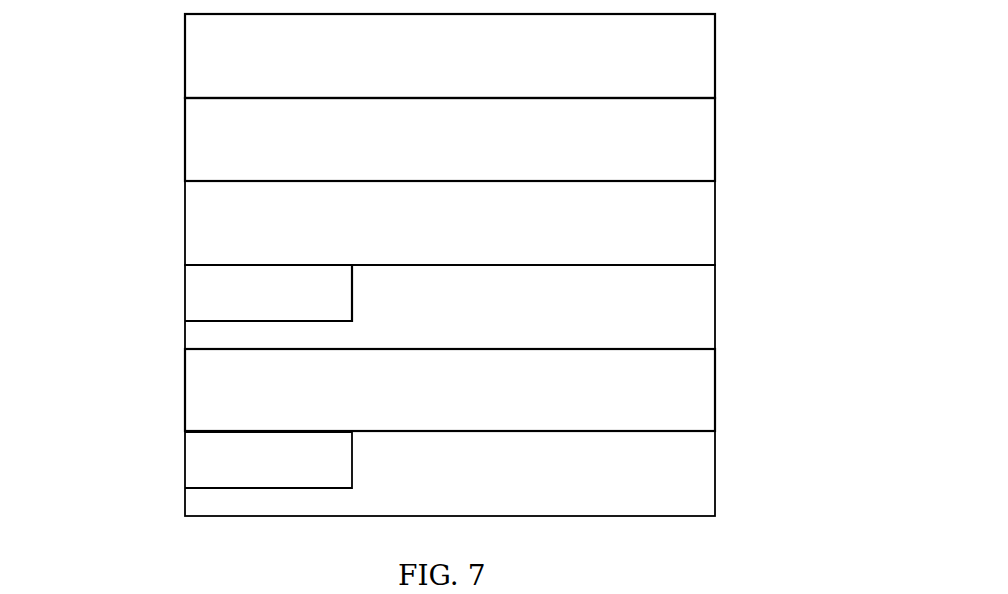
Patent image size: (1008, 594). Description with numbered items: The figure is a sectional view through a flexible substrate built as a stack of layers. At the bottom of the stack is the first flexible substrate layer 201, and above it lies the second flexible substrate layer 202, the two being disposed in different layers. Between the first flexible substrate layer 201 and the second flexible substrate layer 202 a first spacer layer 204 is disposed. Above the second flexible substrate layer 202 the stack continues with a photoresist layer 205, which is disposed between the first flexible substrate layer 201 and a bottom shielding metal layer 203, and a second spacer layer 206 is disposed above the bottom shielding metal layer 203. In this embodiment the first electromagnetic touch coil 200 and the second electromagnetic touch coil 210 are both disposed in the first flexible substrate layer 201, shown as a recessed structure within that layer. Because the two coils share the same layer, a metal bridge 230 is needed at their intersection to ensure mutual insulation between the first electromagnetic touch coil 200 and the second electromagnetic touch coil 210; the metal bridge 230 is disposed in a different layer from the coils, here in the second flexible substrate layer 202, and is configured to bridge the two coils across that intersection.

The second spacer layer 206 is at (715, 70).
The bottom shielding metal layer 203 is at (715, 153).
The photoresist layer 205 is at (715, 237).
The second flexible substrate layer 202 is at (715, 320).
The first spacer layer 204 is at (715, 403).
The first flexible substrate layer 201 is at (715, 487).
The metal bridge 230 is at (208, 300).
The first electromagnetic touch coil 200 is at (197, 450).
The second electromagnetic touch coil 210 is at (197, 478).